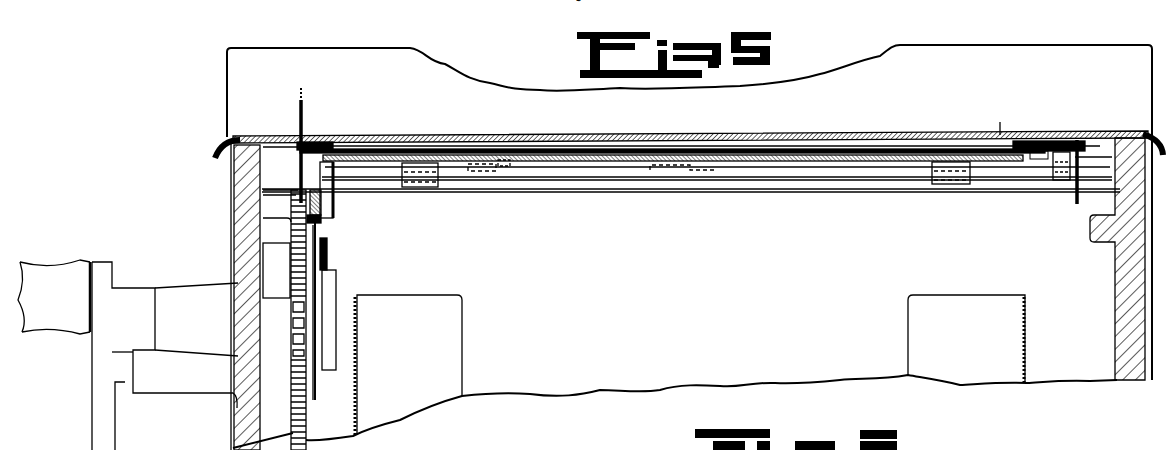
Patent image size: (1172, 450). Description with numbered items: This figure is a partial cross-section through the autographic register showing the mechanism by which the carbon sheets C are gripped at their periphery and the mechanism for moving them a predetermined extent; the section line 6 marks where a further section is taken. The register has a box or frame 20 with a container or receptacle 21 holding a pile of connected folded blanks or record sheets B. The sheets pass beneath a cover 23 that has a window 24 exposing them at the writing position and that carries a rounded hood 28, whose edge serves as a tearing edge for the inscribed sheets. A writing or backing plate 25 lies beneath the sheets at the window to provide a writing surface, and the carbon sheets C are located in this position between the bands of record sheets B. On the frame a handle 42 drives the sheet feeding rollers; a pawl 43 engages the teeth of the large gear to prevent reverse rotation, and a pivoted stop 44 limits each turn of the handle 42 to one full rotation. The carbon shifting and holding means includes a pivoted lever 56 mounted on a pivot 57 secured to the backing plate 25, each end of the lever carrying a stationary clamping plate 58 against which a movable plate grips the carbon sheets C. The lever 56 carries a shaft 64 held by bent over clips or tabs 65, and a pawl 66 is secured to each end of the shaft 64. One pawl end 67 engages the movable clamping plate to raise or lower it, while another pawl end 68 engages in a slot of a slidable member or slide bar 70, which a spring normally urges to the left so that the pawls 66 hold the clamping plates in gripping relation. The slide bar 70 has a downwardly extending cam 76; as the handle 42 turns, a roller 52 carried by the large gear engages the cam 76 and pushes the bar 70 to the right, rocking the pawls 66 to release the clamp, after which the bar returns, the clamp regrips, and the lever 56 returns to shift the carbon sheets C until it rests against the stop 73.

The rounded hood 28 is at (228, 70).
The cover 23 is at (237, 137).
The window 24 is at (374, 138).
The box or frame 20 is at (240, 178).
The stationary clamping plate 58 is at (298, 138).
The section line 6 is at (304, 108).
The bands of blanks or record sheets B is at (977, 147).
The carbon sheets C is at (1018, 142).
The pawl end 67 is at (302, 166).
The writing or backing plate 25 is at (621, 162).
The pivoted lever 56 is at (803, 168).
The bent over clips or tabs 65 is at (425, 190).
The shaft 64 is at (478, 172).
The stop 73 is at (500, 168).
The pivot 57 is at (688, 172).
The pawl 66 is at (334, 195).
The pawl end 68 is at (325, 213).
The slidable member or slide bar 70 is at (328, 228).
The roller 52 is at (330, 252).
The pawl 43 is at (296, 288).
The handle 42 is at (112, 272).
The pivoted stop 44 is at (96, 376).
The cam 76 is at (322, 398).
The container or receptacle 21 is at (456, 322).